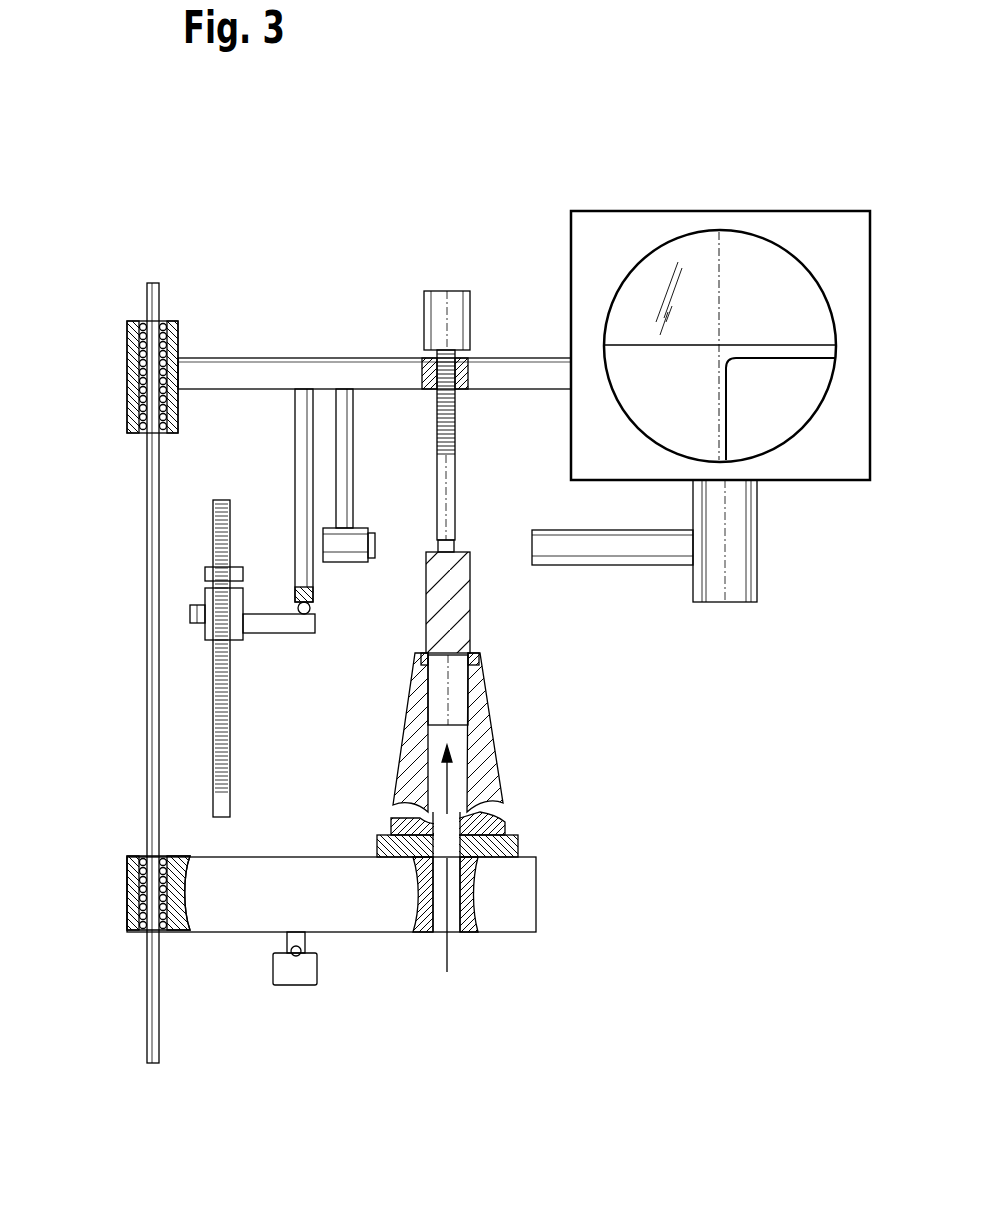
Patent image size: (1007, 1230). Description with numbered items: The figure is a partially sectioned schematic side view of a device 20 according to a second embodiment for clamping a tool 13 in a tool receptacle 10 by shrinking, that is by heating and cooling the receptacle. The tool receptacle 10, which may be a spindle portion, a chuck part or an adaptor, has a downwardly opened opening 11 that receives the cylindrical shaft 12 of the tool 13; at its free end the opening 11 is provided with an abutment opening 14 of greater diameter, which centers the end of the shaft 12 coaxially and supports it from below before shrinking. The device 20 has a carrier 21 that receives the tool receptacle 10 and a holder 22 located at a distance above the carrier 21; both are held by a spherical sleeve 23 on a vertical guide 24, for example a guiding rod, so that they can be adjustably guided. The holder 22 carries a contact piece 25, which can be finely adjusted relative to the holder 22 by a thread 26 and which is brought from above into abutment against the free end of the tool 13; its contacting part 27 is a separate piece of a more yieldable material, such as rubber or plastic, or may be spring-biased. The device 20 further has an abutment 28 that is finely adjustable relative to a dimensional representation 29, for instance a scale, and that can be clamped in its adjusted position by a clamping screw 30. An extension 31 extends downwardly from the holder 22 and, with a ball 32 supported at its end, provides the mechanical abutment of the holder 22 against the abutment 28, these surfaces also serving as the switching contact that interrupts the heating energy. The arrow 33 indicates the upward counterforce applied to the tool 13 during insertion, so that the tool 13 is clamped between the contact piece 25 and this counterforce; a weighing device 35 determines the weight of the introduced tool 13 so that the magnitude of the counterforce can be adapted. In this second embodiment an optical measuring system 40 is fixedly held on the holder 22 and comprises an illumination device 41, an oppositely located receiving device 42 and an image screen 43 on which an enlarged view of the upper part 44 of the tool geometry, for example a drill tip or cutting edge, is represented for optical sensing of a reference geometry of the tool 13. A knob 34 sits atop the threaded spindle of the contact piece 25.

The tool receptacle 10 is at (480, 752).
The opening 11 is at (433, 778).
The cylindrical shaft 12 is at (446, 702).
The tool 13 is at (455, 615).
The abutment opening 14 is at (470, 662).
The device 20 is at (364, 242).
The carrier 21 is at (508, 905).
The holder 22 is at (268, 373).
The spherical sleeve 23 is at (140, 370).
The vertical guide 24 is at (147, 674).
The contact piece 25 is at (447, 480).
The thread 26 is at (437, 393).
The part 27 is at (448, 543).
The abutment 28 is at (237, 618).
The dimensional representation 29 is at (231, 728).
The clamping screw 30 is at (192, 606).
The extension 31 is at (304, 444).
The ball 32 is at (312, 606).
The arrow 33 is at (448, 795).
The knob 34 is at (448, 308).
The weighing device 35 is at (297, 960).
The optical measuring system 40 is at (837, 442).
The illumination device 41 is at (352, 543).
The receiving device 42 is at (603, 548).
The image screen 43 is at (757, 272).
The upper part 44 is at (775, 407).